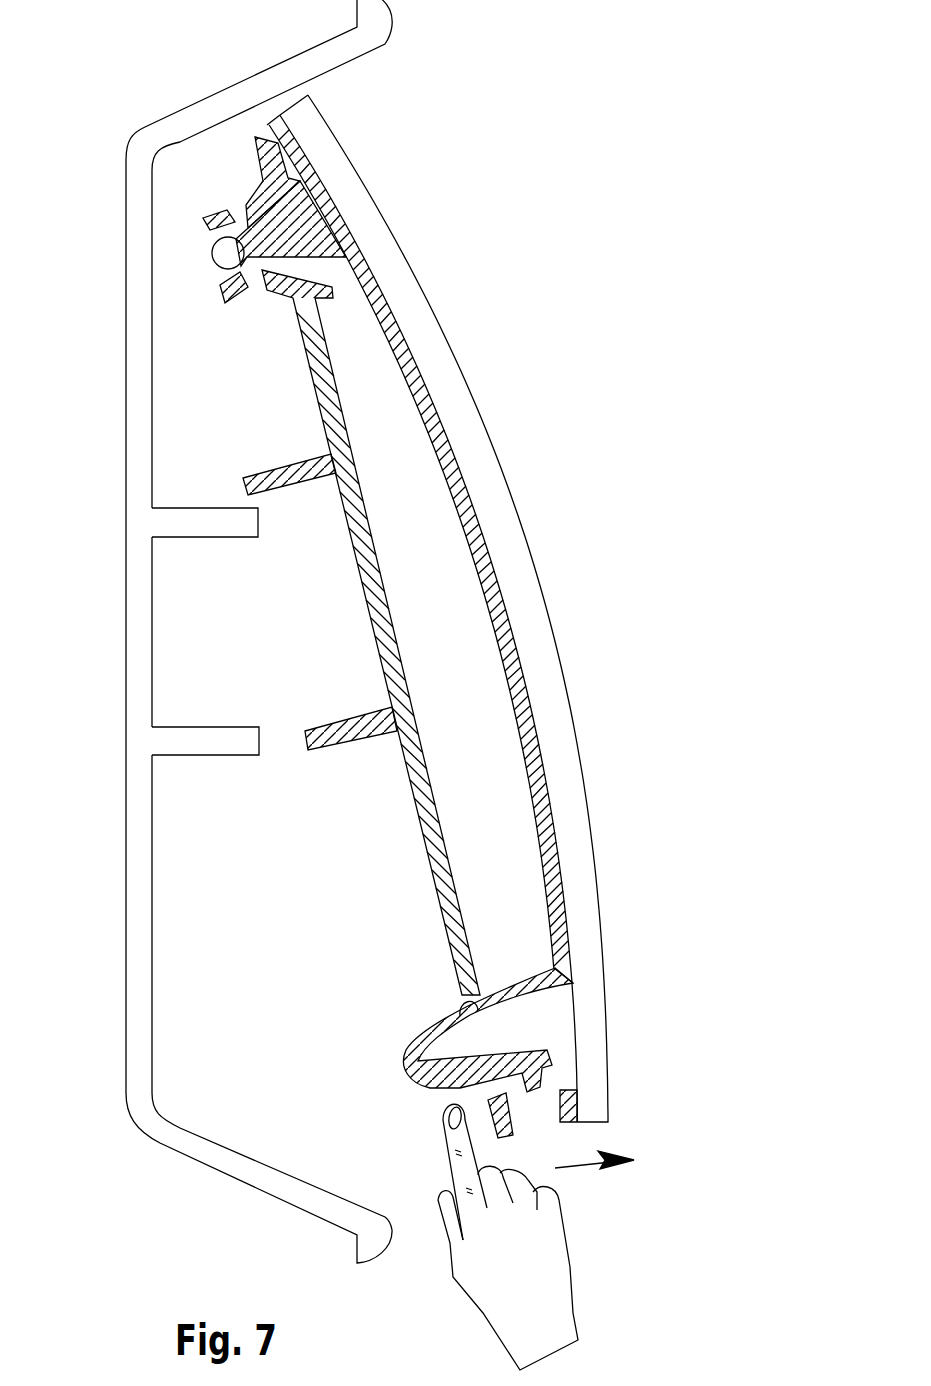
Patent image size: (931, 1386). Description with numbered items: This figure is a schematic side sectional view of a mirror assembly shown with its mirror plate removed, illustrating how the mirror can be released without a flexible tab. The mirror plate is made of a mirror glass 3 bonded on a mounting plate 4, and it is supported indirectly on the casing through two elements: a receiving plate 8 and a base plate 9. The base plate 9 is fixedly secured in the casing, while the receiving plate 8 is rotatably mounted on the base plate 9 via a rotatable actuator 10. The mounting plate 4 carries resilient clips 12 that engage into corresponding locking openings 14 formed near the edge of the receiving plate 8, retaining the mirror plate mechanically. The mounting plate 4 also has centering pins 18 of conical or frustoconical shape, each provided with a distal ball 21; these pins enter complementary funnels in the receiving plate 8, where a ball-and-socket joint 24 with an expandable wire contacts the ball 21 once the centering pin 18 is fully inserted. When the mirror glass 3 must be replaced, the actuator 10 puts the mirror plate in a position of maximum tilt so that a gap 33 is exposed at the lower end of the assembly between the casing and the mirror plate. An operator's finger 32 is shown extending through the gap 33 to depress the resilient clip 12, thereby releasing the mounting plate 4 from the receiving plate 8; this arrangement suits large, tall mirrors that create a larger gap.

The mirror glass 3 is at (558, 731).
The mounting plate 4 is at (512, 643).
The receiving plate 8 is at (447, 893).
The base plate 9 is at (135, 782).
The rotatable actuator 10 is at (205, 643).
The resilient clip 12 is at (403, 1075).
The locking opening 14 is at (470, 1008).
The centering pin 18 is at (297, 222).
The distal ball 21 is at (220, 252).
The ball-and-socket joint 24 is at (228, 198).
The operator's finger 32 is at (457, 1138).
The gap 33 is at (412, 1193).